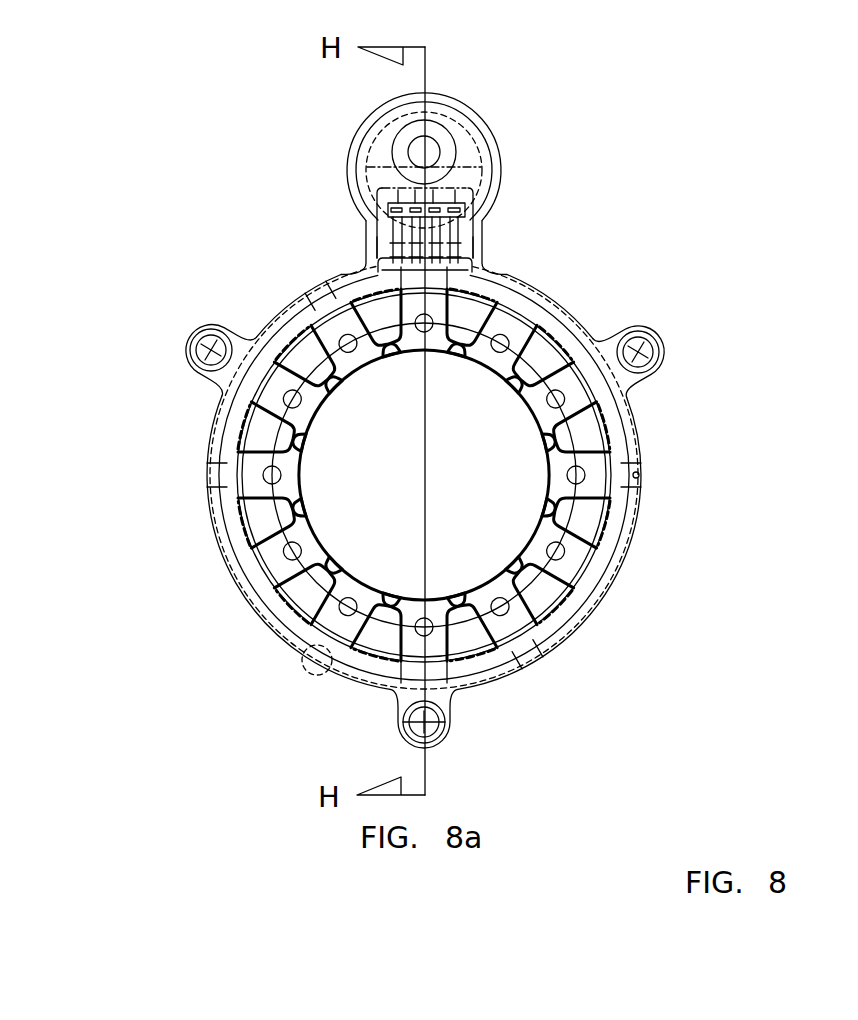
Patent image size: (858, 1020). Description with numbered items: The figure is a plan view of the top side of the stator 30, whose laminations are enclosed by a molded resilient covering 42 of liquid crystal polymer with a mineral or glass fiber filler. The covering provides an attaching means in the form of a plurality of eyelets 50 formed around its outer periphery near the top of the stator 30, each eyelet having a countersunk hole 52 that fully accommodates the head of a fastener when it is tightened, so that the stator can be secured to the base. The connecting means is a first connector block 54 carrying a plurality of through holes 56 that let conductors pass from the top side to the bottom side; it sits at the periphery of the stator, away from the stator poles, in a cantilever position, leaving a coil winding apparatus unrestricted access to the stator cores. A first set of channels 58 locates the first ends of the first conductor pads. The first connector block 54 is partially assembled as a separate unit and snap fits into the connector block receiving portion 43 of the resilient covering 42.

The stator 30 is at (537, 166).
The resilient covering 42 is at (552, 632).
The connector block receiving portion 43 is at (347, 154).
The eyelets 50 is at (653, 325).
The countersunk hole 52 is at (664, 356).
The first connector block 54 is at (458, 198).
The through holes 56 is at (478, 217).
The first set of channels 58 is at (473, 260).